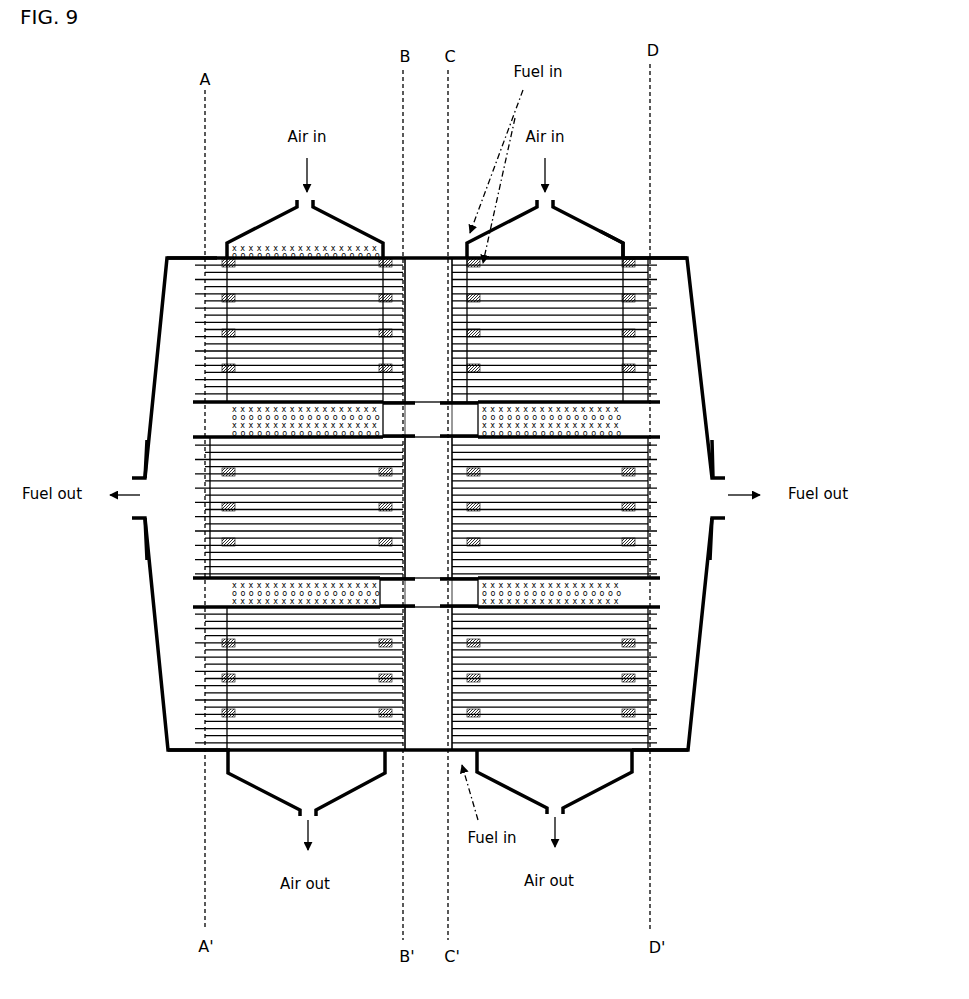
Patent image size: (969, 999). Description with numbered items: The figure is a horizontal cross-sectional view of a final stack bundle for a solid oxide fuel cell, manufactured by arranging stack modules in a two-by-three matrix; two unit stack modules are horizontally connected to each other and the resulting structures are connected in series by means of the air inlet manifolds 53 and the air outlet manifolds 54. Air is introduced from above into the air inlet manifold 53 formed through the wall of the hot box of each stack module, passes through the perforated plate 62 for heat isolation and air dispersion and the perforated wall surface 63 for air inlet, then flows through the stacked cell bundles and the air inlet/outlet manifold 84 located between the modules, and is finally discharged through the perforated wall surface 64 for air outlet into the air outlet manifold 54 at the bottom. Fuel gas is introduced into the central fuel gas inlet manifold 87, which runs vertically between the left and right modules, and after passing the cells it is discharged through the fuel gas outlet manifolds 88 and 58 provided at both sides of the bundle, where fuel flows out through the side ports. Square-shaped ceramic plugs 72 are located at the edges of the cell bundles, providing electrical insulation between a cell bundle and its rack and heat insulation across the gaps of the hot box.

The air inlet manifold 53 is at (266, 213).
The air outlet manifold 54 is at (268, 803).
The fuel gas outlet manifold 58 is at (138, 288).
The perforated plate for heat isolation and air dispersion 62 is at (571, 244).
The perforated wall surface for air inlet 63 is at (627, 241).
The perforated wall surface for air outlet 64 is at (322, 763).
The square-shaped ceramic plug 72 is at (659, 291).
The air inlet/outlet manifold 84 is at (193, 466).
The fuel gas inlet manifold 87 is at (430, 515).
The fuel gas outlet manifold 88 is at (702, 349).